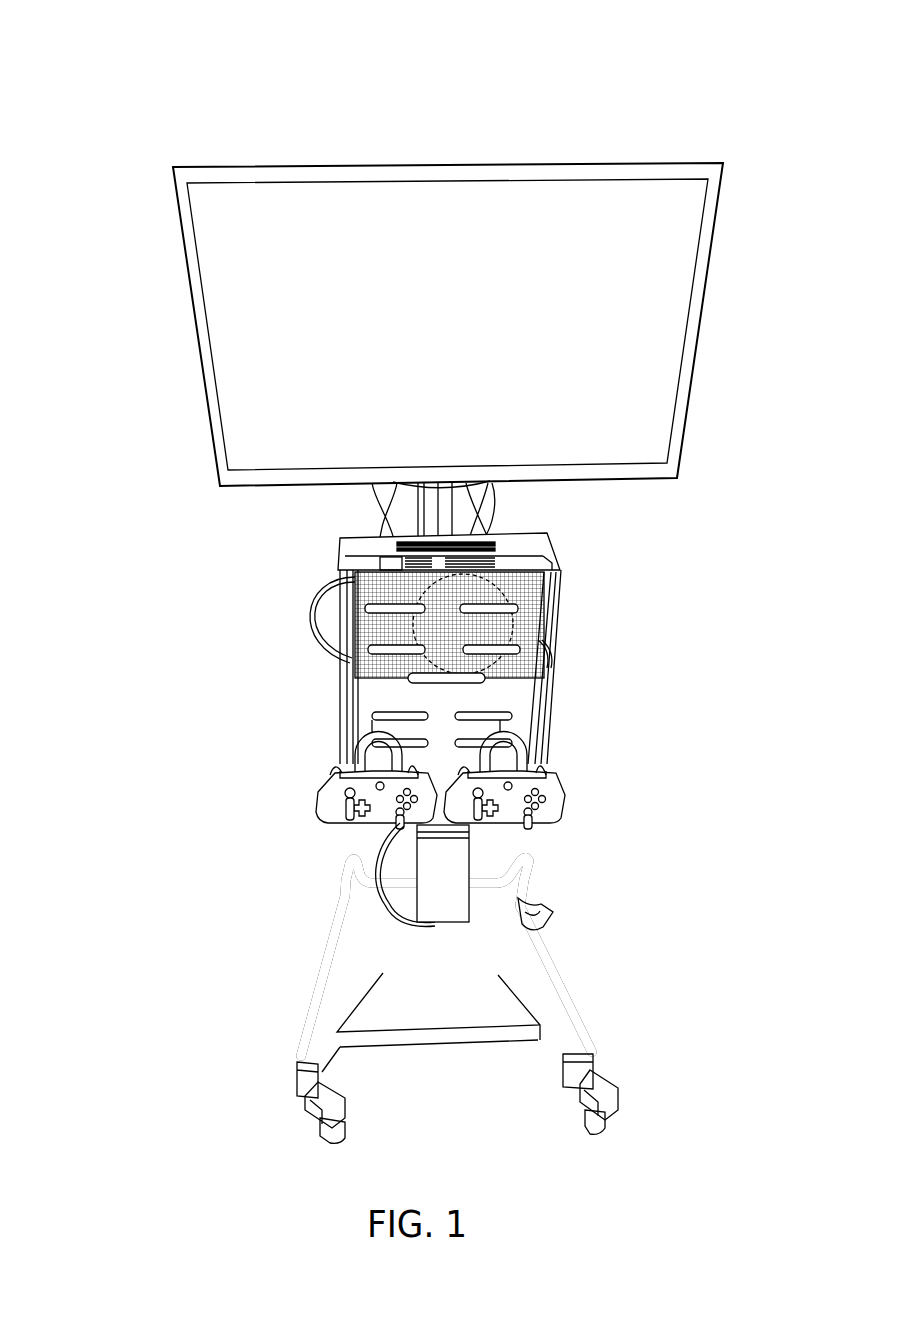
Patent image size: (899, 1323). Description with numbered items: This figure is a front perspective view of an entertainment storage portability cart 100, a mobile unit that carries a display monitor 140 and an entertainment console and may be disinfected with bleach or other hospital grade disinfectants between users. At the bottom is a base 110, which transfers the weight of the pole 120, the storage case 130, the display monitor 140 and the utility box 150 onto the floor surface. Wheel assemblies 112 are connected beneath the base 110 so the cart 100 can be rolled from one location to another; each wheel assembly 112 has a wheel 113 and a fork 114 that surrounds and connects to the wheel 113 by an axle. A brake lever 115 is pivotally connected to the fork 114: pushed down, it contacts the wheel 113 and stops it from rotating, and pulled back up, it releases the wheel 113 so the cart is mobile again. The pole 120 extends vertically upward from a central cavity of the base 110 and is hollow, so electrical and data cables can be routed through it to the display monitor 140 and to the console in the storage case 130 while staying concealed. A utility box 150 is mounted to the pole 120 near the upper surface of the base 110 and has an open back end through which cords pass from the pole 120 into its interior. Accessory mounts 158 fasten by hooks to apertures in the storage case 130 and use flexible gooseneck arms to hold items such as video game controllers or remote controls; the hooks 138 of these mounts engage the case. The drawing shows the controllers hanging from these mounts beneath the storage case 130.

The entertainment storage portability cart 100 is at (130, 56).
The base 110 is at (378, 951).
The wheel assemblies 112 is at (381, 1097).
The wheel 113 is at (359, 1138).
The fork 114 is at (345, 1084).
The brake lever 115 is at (359, 1108).
The pole 120 is at (492, 516).
The storage case 130 is at (360, 660).
The controller hooks 138 is at (346, 741).
The display monitor 140 is at (660, 240).
The utility box 150 is at (402, 891).
The accessory mounts 158 is at (318, 805).